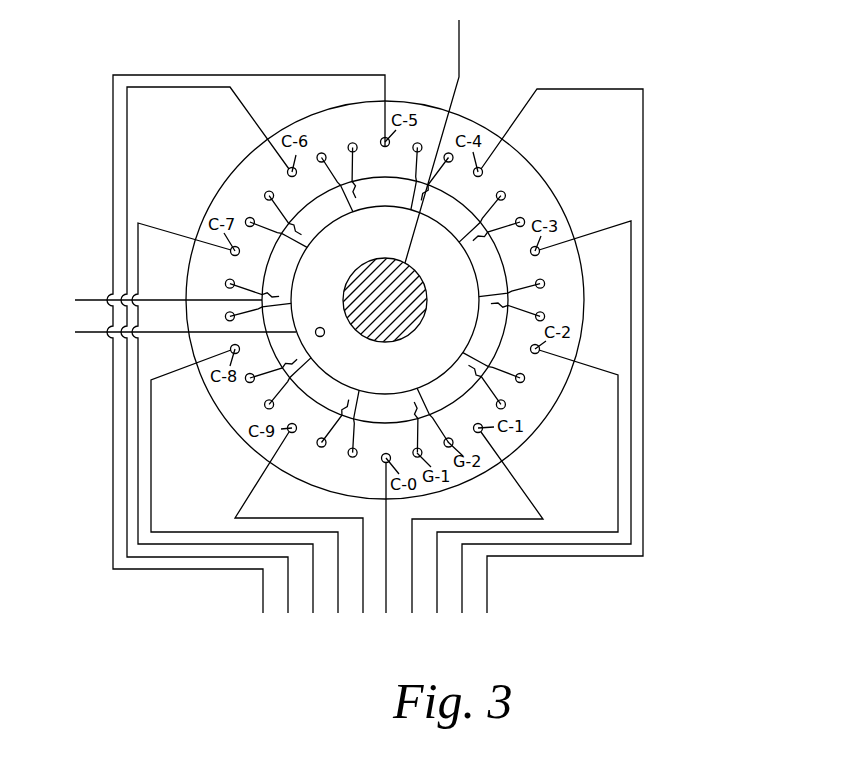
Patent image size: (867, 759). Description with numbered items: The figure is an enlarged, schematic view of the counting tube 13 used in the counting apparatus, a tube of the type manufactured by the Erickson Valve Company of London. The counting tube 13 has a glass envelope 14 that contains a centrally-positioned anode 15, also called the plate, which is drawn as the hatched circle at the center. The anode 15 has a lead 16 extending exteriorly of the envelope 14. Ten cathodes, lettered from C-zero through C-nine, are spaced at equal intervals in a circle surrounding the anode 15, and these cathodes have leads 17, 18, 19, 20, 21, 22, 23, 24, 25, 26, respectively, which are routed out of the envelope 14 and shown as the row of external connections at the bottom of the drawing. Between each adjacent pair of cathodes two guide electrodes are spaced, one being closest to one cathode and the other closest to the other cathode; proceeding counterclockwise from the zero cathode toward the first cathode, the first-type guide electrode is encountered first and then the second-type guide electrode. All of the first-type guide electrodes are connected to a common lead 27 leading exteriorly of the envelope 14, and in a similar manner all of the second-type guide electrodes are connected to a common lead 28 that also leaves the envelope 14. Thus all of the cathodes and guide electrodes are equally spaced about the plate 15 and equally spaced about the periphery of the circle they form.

The counting tube 13 is at (478, 110).
The glass envelope 14 is at (549, 187).
The anode 15 is at (428, 310).
The lead 16 is at (460, 42).
The lead 17 is at (386, 613).
The lead 18 is at (412, 613).
The lead 19 is at (437, 613).
The lead 20 is at (462, 613).
The lead 21 is at (487, 613).
The lead 22 is at (263, 613).
The lead 23 is at (288, 613).
The lead 24 is at (313, 613).
The lead 25 is at (338, 613).
The lead 26 is at (363, 613).
The common lead 27 is at (83, 299).
The common lead 28 is at (83, 333).